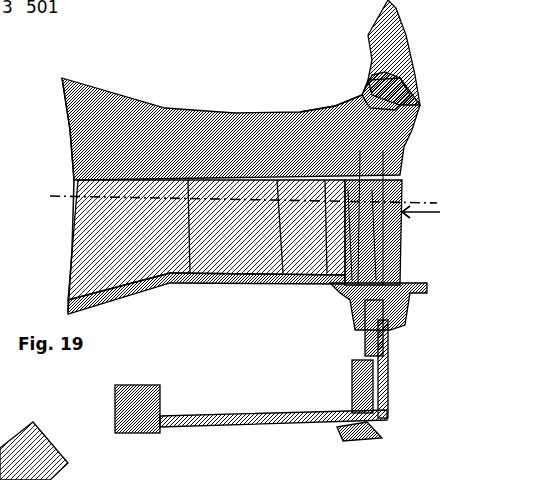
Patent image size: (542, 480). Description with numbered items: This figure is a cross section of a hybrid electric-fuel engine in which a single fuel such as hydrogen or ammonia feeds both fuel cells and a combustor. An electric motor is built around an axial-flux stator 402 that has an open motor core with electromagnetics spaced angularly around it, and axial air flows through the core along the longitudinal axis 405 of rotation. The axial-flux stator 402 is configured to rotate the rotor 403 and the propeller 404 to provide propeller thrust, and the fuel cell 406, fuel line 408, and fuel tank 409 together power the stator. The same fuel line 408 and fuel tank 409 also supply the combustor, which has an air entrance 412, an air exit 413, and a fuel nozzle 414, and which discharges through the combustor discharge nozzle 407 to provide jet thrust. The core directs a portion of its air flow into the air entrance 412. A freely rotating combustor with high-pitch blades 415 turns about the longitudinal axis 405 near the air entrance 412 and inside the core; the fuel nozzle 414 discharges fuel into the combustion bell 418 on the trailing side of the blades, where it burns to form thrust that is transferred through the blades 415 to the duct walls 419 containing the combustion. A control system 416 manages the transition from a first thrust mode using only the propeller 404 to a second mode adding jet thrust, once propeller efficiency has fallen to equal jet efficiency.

The axial-flux stator 402 is at (365, 84).
The rotor 403 is at (375, 66).
The propeller 404 is at (367, 332).
The longitudinal axis of rotation 405 is at (226, 191).
The fuel cell 406 is at (352, 378).
The combustor discharge nozzle 407 is at (72, 148).
The fuel line 408 is at (387, 377).
The fuel tank 409 is at (136, 386).
The air entrance 412 is at (427, 222).
The air exit 413 is at (65, 239).
The fuel nozzle 414 is at (362, 180).
The blades 415 is at (345, 273).
The control system 416 is at (339, 437).
The combustion bell 418 is at (353, 229).
The duct walls 419 is at (330, 116).